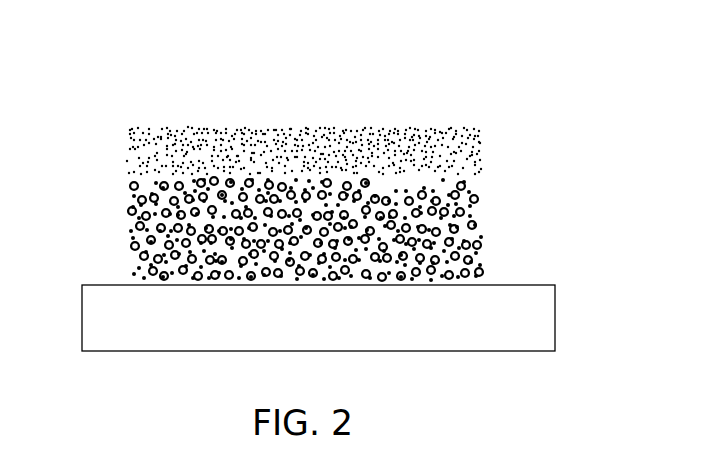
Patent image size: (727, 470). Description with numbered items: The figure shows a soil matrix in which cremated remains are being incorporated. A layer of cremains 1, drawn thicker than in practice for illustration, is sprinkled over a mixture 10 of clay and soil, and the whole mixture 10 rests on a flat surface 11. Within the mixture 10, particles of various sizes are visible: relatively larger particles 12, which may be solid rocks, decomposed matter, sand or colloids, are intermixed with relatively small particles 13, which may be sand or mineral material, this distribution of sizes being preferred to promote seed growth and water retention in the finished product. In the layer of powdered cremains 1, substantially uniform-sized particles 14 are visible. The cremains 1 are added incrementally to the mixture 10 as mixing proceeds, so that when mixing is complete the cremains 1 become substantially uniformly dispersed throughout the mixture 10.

The layer of cremains 1 is at (495, 128).
The mixture 10 is at (311, 230).
The flat surface 11 is at (332, 330).
The larger particles 12 is at (133, 215).
The small particles 13 is at (131, 183).
The uniform-sized particles 14 is at (176, 129).